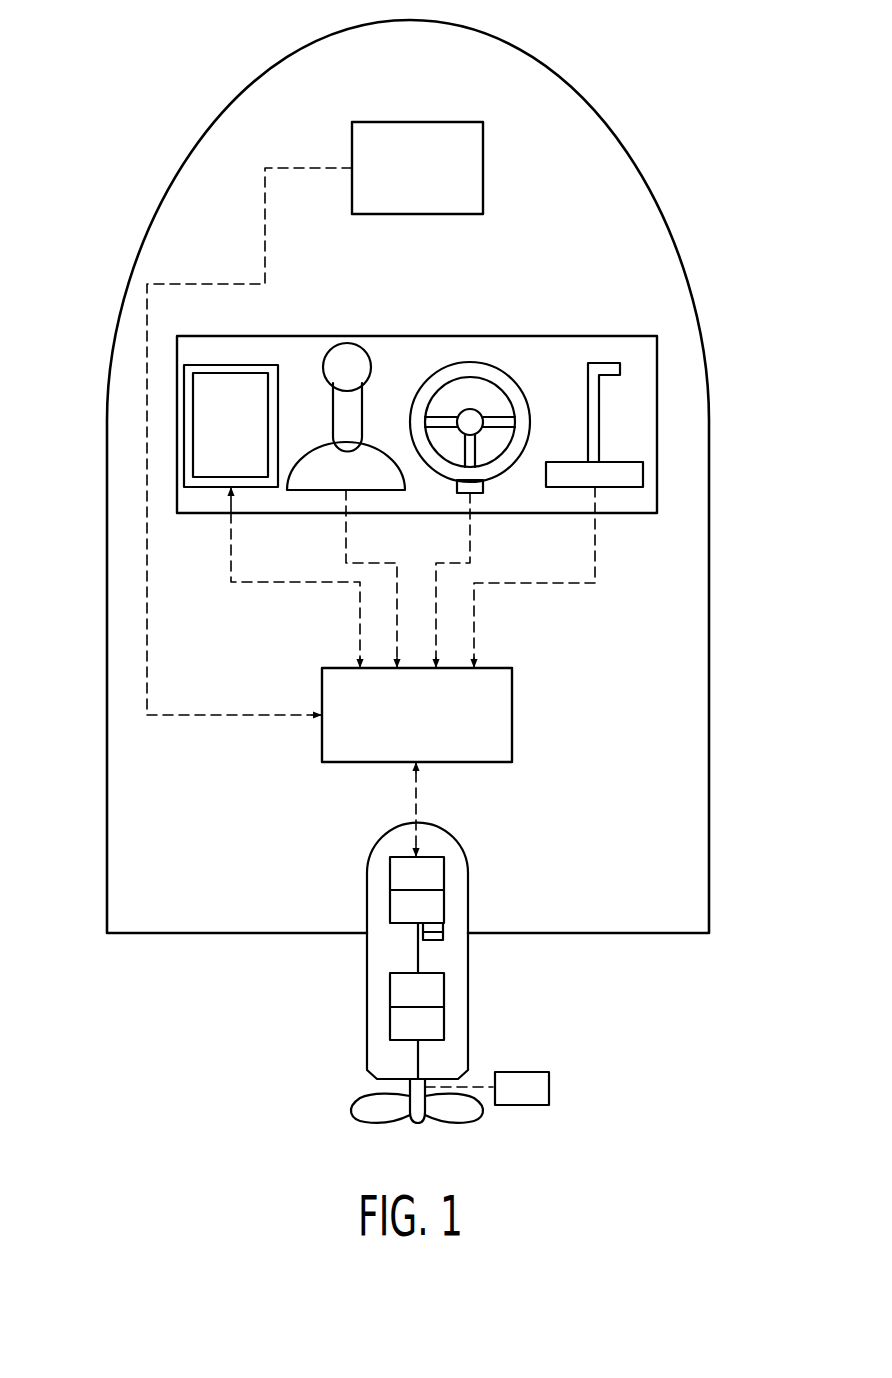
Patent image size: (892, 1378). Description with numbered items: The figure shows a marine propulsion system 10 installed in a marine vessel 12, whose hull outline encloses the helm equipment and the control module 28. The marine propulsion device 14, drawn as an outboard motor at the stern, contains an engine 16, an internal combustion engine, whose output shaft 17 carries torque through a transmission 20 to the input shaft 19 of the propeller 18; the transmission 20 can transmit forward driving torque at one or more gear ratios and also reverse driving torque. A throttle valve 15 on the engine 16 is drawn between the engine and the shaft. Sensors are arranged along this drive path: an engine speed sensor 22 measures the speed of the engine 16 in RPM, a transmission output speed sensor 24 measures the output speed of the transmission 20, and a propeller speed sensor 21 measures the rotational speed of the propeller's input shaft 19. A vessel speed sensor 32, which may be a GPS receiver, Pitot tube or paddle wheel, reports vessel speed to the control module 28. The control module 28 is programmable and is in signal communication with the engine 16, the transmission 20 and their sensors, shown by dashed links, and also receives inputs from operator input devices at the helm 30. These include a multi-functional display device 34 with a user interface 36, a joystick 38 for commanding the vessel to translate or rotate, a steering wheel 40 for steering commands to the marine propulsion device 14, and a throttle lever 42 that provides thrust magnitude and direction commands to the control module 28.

The marine propulsion system 10 is at (540, 670).
The marine vessel 12 is at (642, 170).
The marine propulsion device 14 is at (378, 843).
The throttle valve 15 is at (443, 932).
The engine 16 is at (444, 905).
The output shaft 17 is at (413, 948).
The propeller 18 is at (447, 1123).
The input shaft 19 is at (410, 1120).
The transmission 20 is at (444, 990).
The propeller speed sensor 21 is at (549, 1086).
The engine speed sensor 22 is at (444, 870).
The transmission output speed sensor 24 is at (444, 1022).
The control module 28 is at (512, 713).
The helm 30 is at (418, 336).
The vessel speed sensor 32 is at (418, 214).
The multi-functional display device 34 is at (232, 365).
The user interface 36 is at (278, 421).
The joystick 38 is at (360, 415).
The steering wheel 40 is at (513, 383).
The throttle lever 42 is at (599, 416).